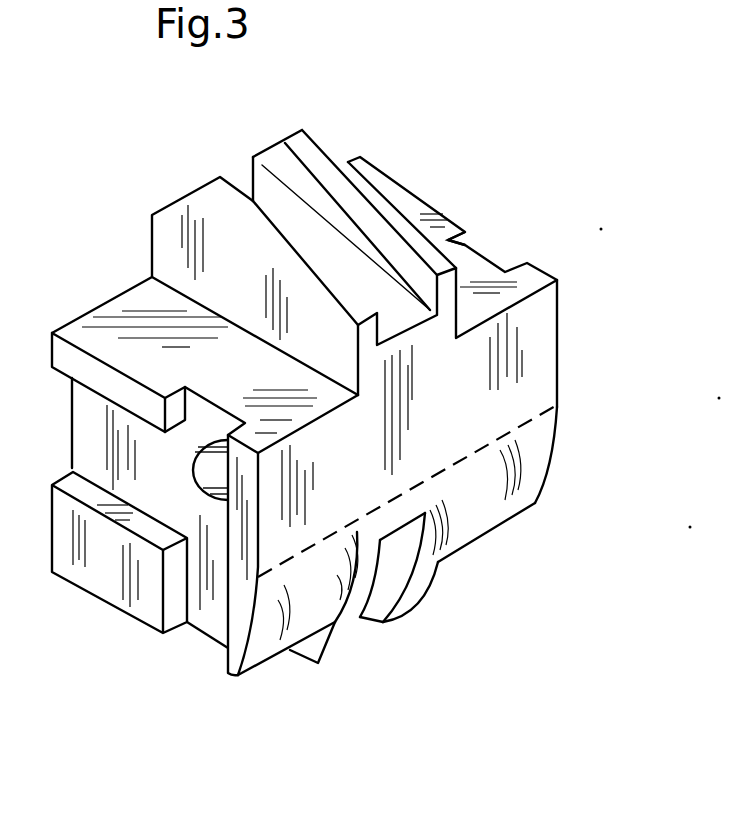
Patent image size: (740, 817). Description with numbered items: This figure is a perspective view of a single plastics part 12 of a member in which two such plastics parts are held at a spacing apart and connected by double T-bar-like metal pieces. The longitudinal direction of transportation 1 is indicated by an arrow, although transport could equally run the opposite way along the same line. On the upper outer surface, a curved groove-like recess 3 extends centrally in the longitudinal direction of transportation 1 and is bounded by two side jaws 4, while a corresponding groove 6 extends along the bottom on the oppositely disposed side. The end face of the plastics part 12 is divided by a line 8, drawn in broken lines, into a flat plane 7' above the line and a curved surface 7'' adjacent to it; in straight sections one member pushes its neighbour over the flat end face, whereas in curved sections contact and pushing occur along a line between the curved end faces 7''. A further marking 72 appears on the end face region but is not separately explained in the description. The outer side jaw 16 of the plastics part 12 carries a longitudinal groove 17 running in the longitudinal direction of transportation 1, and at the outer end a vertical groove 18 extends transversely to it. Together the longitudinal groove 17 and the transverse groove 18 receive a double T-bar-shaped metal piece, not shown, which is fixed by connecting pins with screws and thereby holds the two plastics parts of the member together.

The longitudinal direction of transportation 1 is at (28, 650).
The groove-like recess 3 is at (360, 263).
The side jaws 4 is at (323, 160).
The groove 6 is at (388, 598).
The flat plane 7' is at (495, 410).
The side wall upper portion 72 is at (513, 355).
The curved surface 7'' is at (534, 491).
The line 8 is at (497, 438).
The plastics part 12 is at (465, 238).
The outer side jaw 16 is at (60, 569).
The longitudinal groove 17 is at (90, 442).
The vertical groove 18 is at (195, 620).